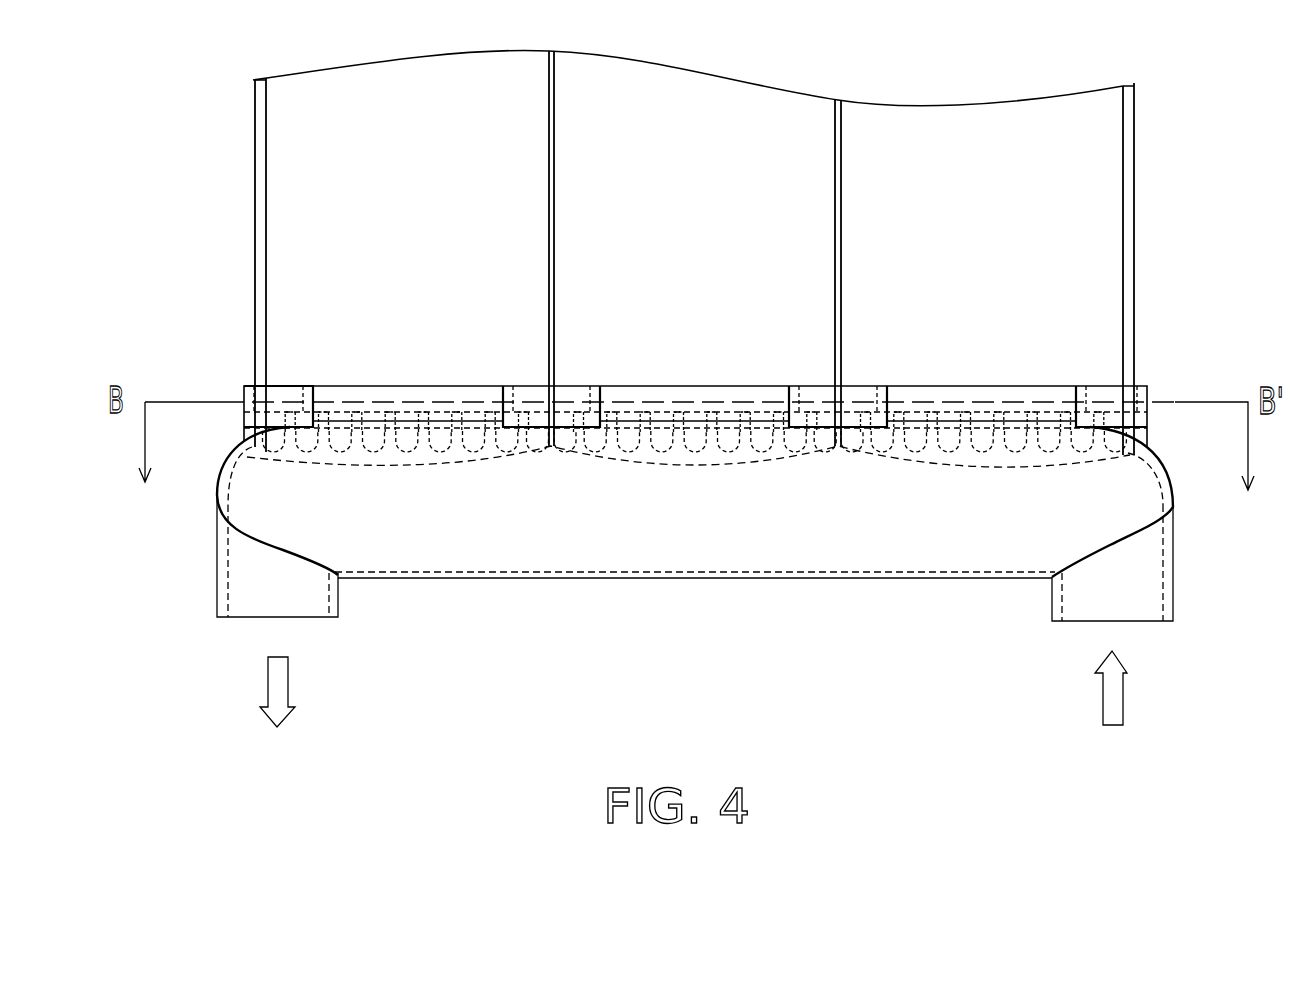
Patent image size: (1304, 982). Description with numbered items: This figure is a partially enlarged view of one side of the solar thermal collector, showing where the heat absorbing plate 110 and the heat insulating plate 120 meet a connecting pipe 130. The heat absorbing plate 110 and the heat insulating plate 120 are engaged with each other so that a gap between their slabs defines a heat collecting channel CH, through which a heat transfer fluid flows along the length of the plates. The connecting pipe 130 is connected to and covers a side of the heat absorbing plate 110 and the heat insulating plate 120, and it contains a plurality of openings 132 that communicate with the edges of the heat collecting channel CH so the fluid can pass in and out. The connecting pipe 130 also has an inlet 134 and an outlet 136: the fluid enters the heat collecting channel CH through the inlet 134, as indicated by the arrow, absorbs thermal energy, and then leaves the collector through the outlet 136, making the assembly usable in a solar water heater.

The heat absorbing plate 110 is at (325, 142).
The heat insulating plate 120 is at (258, 192).
The heat collecting channel CH is at (1052, 312).
The connecting pipe 130 is at (668, 579).
The opening 132 is at (1042, 445).
The inlet 134 is at (1137, 623).
The outlet 136 is at (235, 619).